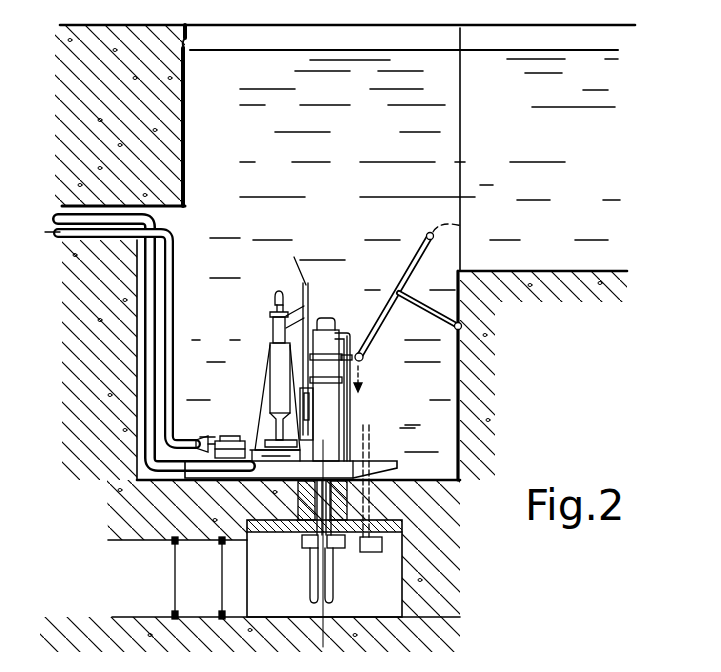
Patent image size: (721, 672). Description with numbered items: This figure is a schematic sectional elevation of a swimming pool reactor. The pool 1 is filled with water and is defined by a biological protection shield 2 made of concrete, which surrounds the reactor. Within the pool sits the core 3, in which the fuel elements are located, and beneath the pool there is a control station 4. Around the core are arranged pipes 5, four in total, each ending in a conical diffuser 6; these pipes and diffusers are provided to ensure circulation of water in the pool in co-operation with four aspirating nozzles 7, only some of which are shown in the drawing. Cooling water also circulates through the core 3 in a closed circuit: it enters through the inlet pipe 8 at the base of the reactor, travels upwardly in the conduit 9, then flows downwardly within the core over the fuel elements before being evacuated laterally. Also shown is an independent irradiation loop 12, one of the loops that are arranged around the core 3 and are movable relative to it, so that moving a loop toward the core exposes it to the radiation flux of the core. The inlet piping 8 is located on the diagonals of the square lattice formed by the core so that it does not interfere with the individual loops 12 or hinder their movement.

The pool 1 is at (246, 130).
The biological protection shield 2 is at (106, 100).
The core 3 is at (330, 421).
The control station 4 is at (377, 594).
The pipes 5 is at (423, 240).
The conical diffusers 6 is at (364, 358).
The aspirating nozzles 7 is at (228, 440).
The inlet pipe 8 is at (148, 375).
The conduit 9 is at (350, 412).
The independent irradiation loops 12 is at (277, 352).